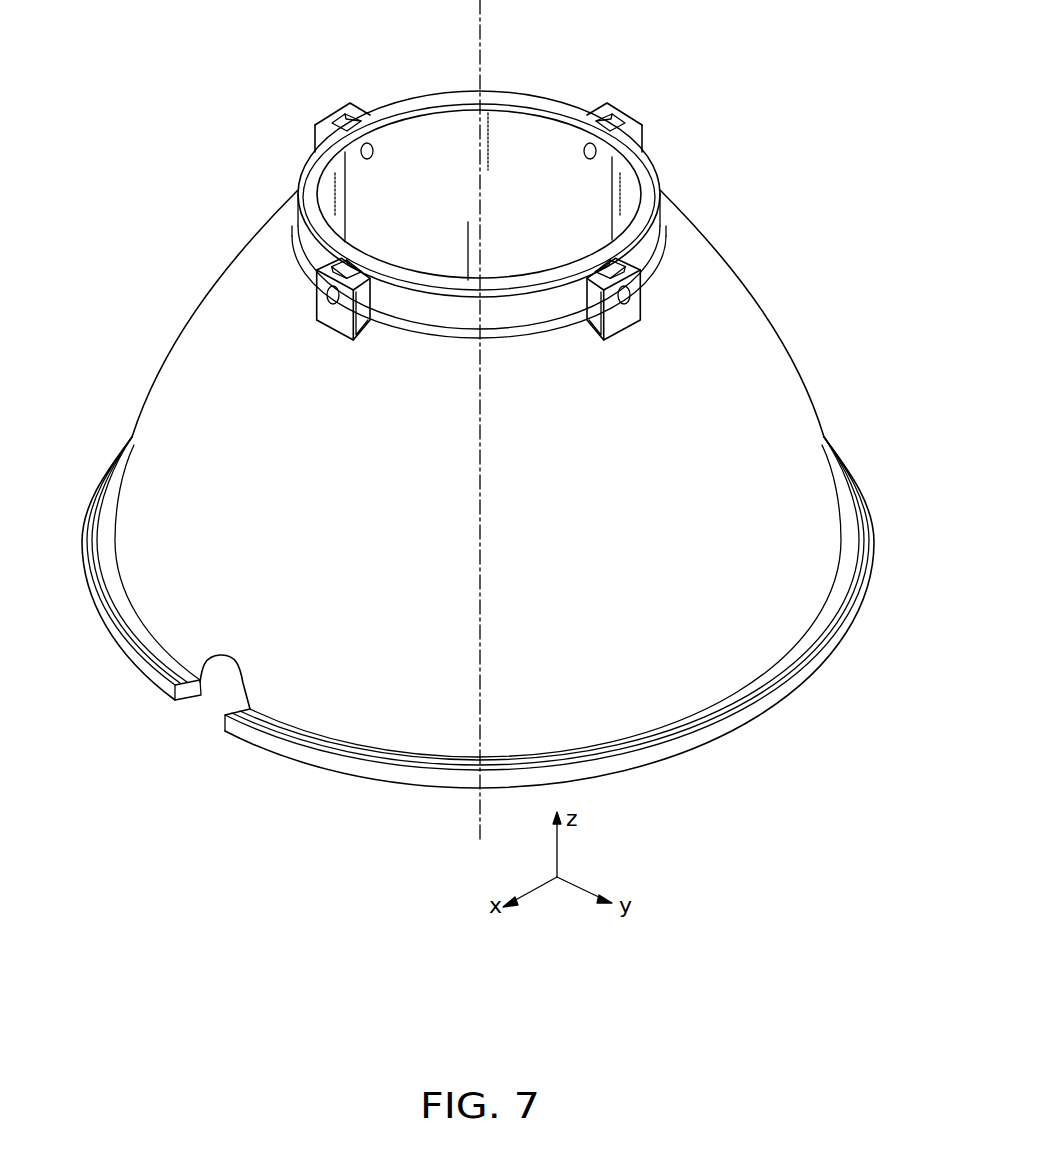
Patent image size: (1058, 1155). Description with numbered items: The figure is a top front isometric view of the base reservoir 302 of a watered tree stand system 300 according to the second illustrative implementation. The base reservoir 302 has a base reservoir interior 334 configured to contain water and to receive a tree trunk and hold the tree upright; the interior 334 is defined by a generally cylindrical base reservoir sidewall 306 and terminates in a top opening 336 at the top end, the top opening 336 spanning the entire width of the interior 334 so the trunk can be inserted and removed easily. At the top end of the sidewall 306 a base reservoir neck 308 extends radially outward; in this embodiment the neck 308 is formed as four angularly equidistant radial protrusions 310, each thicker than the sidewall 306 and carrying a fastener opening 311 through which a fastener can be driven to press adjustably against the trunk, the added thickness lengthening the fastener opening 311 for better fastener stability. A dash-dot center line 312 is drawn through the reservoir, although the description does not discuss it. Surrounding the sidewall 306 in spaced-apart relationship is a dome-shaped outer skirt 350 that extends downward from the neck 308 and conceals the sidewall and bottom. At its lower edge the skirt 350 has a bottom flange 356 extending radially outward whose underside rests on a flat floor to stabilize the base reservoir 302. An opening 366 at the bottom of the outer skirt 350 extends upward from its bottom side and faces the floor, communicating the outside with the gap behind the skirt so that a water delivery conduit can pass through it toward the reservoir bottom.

The watered tree stand system 300 is at (169, 117).
The base reservoir 302 is at (183, 162).
The base reservoir sidewall 306 is at (415, 145).
The base reservoir neck 308 is at (645, 252).
The radial protrusions 310 is at (315, 135).
The fastener openings 311 is at (326, 297).
The central axis 312 is at (478, 42).
The base reservoir interior 334 is at (520, 233).
The top opening 336 is at (527, 113).
The outer skirt 350 is at (196, 404).
The bottom flange 356 is at (141, 674).
The opening 366 is at (225, 695).